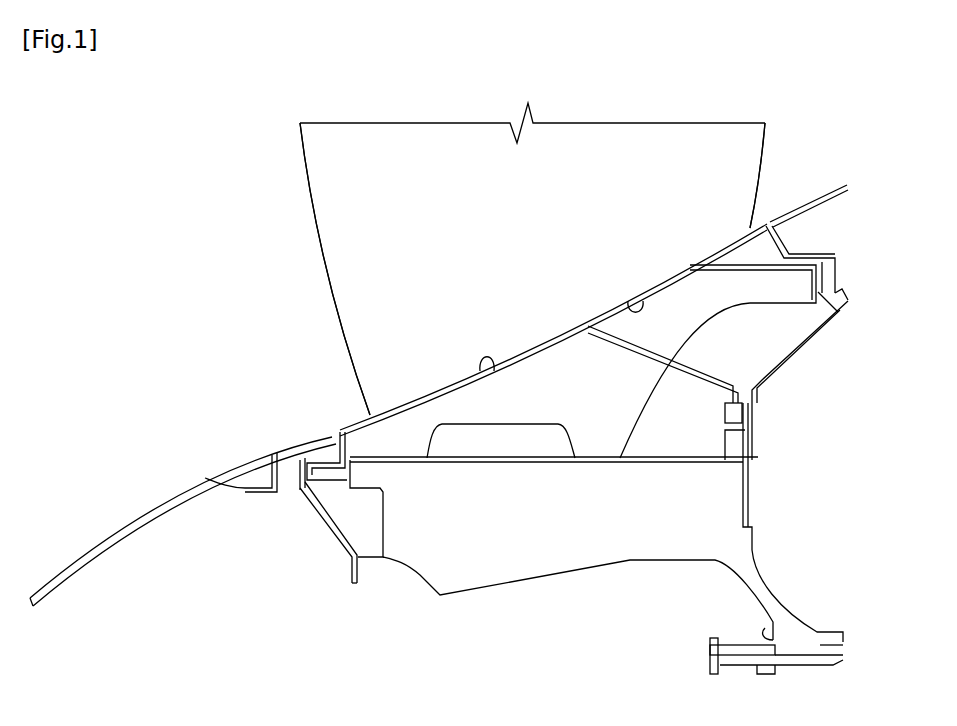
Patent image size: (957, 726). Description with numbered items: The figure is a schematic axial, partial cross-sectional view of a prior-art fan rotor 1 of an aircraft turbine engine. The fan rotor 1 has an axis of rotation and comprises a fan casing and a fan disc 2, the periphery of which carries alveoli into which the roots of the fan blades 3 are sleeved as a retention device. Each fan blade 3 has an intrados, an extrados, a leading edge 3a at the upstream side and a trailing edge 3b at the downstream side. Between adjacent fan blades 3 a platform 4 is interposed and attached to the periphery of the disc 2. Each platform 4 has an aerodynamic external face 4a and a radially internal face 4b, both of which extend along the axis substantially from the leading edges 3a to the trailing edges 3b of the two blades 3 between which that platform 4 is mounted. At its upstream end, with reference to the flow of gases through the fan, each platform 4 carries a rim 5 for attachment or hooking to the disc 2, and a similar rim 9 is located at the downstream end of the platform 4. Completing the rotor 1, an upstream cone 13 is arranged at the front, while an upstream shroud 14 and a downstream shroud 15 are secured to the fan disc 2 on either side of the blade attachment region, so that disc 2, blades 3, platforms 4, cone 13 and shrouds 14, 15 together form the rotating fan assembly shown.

The fan rotor 1 is at (115, 525).
The fan disc 2 is at (717, 497).
The fan blade 3 is at (345, 230).
The leading edge 3a is at (325, 276).
The trailing edge 3b is at (762, 177).
The platform 4 is at (697, 316).
The aerodynamic external face 4a is at (487, 374).
The internal face 4b is at (636, 294).
The rim 5 is at (322, 492).
The rim 9 is at (843, 303).
The upstream cone 13 is at (257, 475).
The upstream shroud 14 is at (294, 456).
The downstream shroud 15 is at (788, 243).